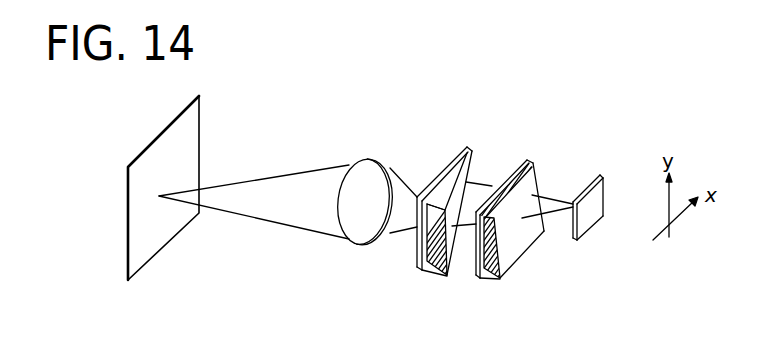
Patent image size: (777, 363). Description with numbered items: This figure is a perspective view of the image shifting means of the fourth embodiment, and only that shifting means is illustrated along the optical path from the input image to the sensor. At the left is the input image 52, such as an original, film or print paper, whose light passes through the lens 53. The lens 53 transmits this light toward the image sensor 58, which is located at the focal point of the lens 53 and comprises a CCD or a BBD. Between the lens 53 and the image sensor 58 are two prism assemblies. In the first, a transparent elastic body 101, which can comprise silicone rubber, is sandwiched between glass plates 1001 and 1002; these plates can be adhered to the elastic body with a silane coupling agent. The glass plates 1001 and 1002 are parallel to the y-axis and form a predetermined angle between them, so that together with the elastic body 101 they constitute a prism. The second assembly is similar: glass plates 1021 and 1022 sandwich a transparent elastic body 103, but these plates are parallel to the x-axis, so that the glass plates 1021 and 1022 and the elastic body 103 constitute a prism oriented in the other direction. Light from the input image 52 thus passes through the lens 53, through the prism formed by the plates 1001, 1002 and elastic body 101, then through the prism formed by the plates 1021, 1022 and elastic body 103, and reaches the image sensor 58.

The input image 52 is at (188, 123).
The lens 53 is at (370, 172).
The glass plate 1001 is at (445, 162).
The glass plate 1002 is at (471, 150).
The transparent elastic body 101 is at (433, 272).
The glass plate 1021 is at (517, 157).
The glass plate 1022 is at (533, 173).
The transparent elastic body 103 is at (488, 277).
The image sensor 58 is at (588, 220).